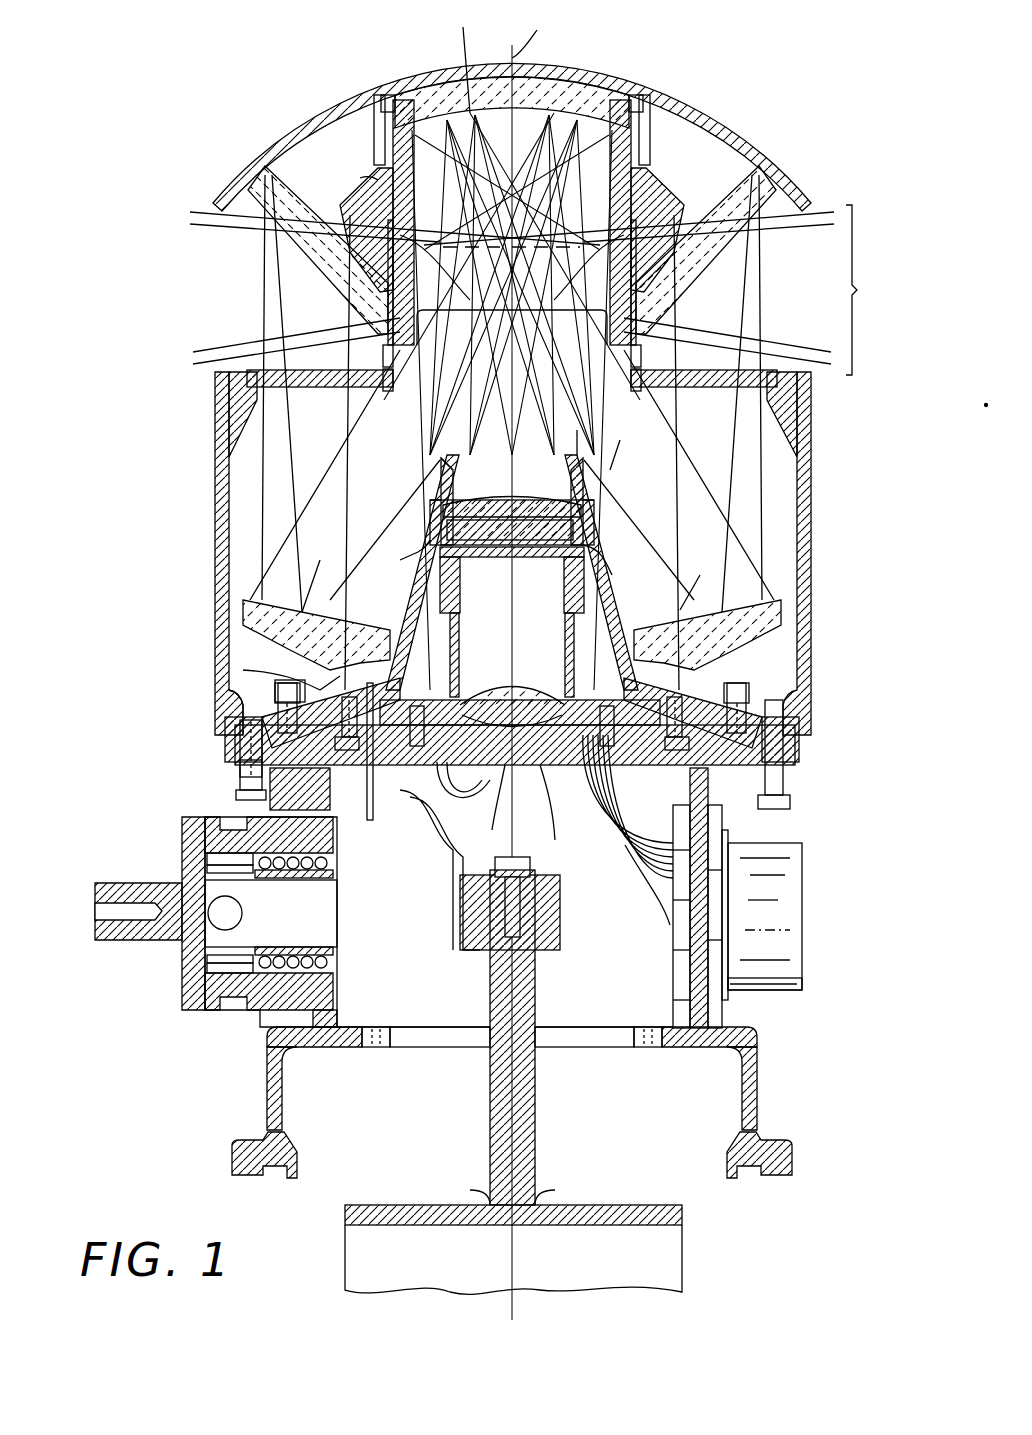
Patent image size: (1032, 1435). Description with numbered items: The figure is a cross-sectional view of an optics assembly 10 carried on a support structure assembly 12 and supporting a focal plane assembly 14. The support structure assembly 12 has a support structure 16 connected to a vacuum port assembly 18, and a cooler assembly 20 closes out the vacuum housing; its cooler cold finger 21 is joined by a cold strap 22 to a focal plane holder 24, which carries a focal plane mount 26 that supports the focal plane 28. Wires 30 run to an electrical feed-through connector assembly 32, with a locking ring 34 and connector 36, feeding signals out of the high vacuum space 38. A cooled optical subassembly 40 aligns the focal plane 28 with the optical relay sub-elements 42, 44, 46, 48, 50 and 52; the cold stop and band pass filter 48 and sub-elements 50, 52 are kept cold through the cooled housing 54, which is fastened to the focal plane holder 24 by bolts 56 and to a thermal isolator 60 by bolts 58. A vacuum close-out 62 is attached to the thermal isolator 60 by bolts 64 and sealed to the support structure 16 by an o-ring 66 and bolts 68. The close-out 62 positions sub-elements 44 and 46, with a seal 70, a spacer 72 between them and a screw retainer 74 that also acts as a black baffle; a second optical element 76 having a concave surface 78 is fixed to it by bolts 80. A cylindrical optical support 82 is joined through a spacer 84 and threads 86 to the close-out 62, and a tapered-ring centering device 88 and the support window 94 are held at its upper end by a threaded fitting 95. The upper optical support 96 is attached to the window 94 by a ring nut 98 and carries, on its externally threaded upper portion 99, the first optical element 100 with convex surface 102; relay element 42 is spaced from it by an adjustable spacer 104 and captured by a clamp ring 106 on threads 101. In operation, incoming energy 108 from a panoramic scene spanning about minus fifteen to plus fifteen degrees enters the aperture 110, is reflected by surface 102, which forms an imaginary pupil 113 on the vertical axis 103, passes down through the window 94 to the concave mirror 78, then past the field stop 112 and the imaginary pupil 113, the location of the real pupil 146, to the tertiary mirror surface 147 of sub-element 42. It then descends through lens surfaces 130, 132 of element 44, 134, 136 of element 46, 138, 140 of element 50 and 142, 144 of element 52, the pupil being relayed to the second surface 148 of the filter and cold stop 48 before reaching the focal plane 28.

The optics assembly 10 is at (180, 598).
The support structure assembly 12 is at (160, 786).
The focal plane assembly 14 is at (595, 790).
The support structure 16 is at (337, 856).
The vacuum port assembly 18 is at (185, 1012).
The cooler assembly 20 is at (540, 1162).
The cooler cold finger 21 is at (535, 992).
The cold strap 22 is at (463, 880).
The focal plane holder 24 is at (528, 857).
The focal plane mount 26 is at (485, 765).
The focal plane 28 is at (485, 592).
The wires 30 is at (673, 820).
The electrical feed-through connector assembly 32 is at (808, 933).
The locking ring 34 is at (725, 820).
The connector 36 is at (770, 990).
The high vacuum space 38 is at (505, 955).
The cooled optical subassembly 40 is at (680, 610).
The optical relay sub-element 42 is at (560, 78).
The optical relay sub-element 44 is at (490, 470).
The optical relay sub-element 46 is at (458, 470).
The cold stop and band pass filter optical relay element 48 is at (432, 540).
The optical relay sub-element 50 is at (512, 690).
The optical relay sub-element 52 is at (612, 685).
The cooled housing 54 is at (428, 685).
The bolts 56 is at (414, 718).
The bolts 58 is at (400, 768).
The thermal isolator 60 is at (368, 772).
The vacuum close-out 62 is at (260, 645).
The bolts 64 is at (708, 785).
The o-ring 66 is at (300, 790).
The bolts 68 is at (236, 797).
The seal 70 is at (612, 468).
The spacer 72 is at (555, 462).
The screw retainer 74 is at (595, 428).
The optical element 76 is at (258, 598).
The concave surface 78 is at (320, 610).
The bolts 80 is at (290, 682).
The cylindrical optical support 82 is at (214, 500).
The spacer 84 is at (232, 705).
The threads 86 is at (232, 760).
The centering device 88 is at (238, 368).
The support window 94 is at (335, 368).
The threaded fitting 95 is at (214, 408).
The upper optical support 96 is at (412, 100).
The ring nut 98 is at (375, 392).
The externally threaded upper portion 99 is at (385, 195).
The optical element 100 is at (290, 150).
The threads 101 is at (345, 115).
The convex surface 102 is at (250, 228).
The vertical axis 103 is at (546, 33).
The adjustable spacer 104 is at (640, 95).
The clamp ring 106 is at (233, 182).
The incoming energy 108 is at (812, 208).
The aperture 110 is at (876, 290).
The field stop 112 is at (345, 228).
The imaginary pupil 113 is at (520, 225).
The first surface of lens 44 130 is at (518, 500).
The second surface of lens 44 132 is at (580, 535).
The first surface of lens 46 134 is at (510, 545).
The second surface of lens 46 136 is at (590, 565).
The first surface of lens 50 138 is at (540, 700).
The second surface of lens 50 140 is at (485, 802).
The first surface of lens 52 142 is at (640, 645).
The second surface of lens 52 144 is at (542, 811).
The real pupil 146 is at (640, 210).
The tertiary mirror surface 147 is at (470, 56).
The second surface of filter and cold stop 148 is at (520, 580).